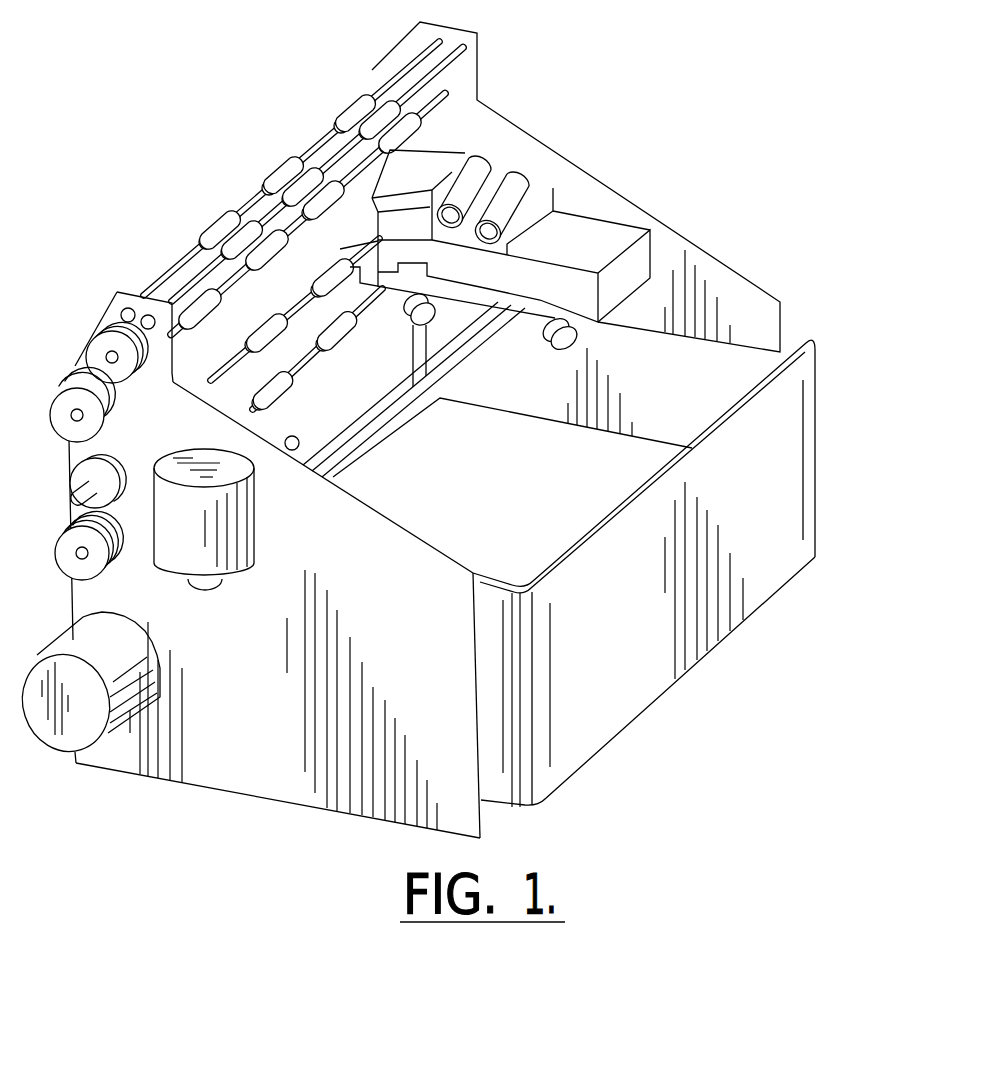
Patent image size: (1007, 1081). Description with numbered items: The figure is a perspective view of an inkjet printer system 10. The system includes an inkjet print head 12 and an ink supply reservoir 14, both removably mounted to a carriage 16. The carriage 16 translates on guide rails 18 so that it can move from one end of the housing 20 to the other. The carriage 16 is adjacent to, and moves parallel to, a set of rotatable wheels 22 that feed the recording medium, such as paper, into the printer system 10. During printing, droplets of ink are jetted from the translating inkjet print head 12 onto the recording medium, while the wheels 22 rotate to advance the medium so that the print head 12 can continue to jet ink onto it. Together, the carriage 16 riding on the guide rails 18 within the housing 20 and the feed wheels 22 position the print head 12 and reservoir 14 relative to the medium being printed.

The inkjet printer system 10 is at (613, 112).
The inkjet print head 12 is at (433, 166).
The ink supply reservoir 14 is at (622, 273).
The carriage 16 is at (590, 333).
The guide rails 18 is at (497, 362).
The housing 20 is at (777, 500).
The rotatable wheels 22 is at (253, 302).